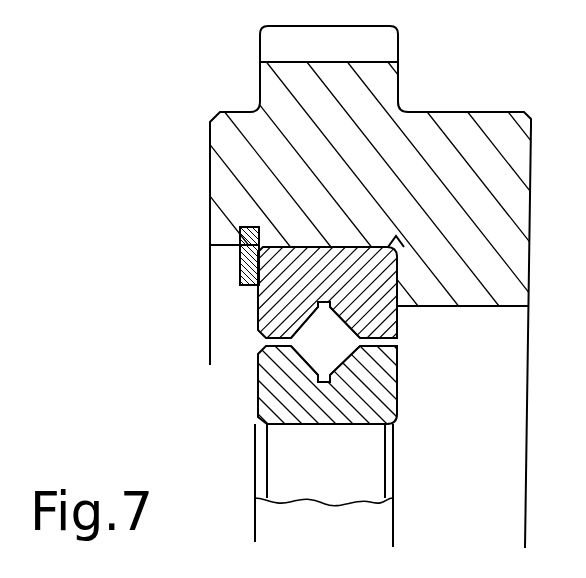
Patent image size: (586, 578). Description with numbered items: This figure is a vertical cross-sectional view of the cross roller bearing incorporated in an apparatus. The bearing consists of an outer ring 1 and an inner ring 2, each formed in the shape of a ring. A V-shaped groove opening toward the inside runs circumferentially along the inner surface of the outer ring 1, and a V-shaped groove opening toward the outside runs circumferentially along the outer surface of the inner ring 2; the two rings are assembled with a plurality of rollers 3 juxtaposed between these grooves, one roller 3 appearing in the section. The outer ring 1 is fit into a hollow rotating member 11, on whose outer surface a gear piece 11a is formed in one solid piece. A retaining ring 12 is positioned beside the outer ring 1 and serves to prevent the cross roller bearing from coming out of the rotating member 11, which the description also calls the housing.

The outer ring 1 is at (277, 315).
The inner ring 2 is at (282, 388).
The roller 3 is at (293, 342).
The rotating member 11 is at (228, 173).
The gear piece 11a is at (283, 42).
The retaining ring 12 is at (240, 267).